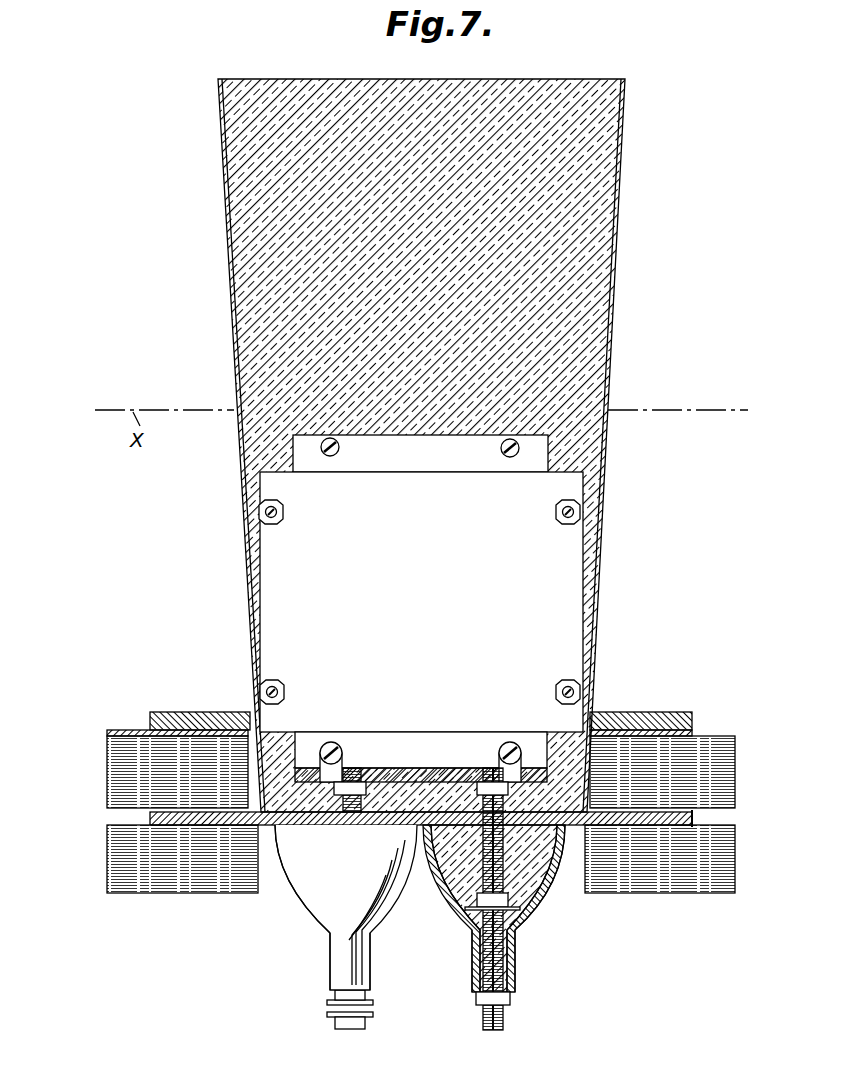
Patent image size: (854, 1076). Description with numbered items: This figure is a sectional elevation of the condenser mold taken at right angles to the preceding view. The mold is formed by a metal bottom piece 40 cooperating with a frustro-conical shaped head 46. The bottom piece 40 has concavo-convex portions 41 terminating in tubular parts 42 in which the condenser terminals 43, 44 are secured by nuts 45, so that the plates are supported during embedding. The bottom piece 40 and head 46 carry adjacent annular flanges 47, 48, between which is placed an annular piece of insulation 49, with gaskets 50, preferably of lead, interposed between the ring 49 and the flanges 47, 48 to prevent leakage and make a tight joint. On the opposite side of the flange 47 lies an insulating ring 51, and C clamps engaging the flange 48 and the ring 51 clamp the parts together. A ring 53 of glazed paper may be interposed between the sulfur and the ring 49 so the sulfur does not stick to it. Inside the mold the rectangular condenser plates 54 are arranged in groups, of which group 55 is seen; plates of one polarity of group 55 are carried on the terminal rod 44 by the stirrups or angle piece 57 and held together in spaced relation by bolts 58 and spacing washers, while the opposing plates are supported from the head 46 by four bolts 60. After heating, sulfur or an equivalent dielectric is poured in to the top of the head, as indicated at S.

The frustro-conical shaped head 46 is at (623, 148).
The sulfur fill level S is at (245, 168).
The condenser plates 54 is at (420, 583).
The group of plates 55 is at (575, 590).
The stirrups or angle piece 57 is at (400, 778).
The bolts 58 is at (515, 452).
The bolts 60 is at (580, 512).
The annular flange 48 is at (672, 712).
The gaskets 50 is at (692, 733).
The annular piece of insulation 49 is at (735, 776).
The annular flange 47 is at (700, 818).
The insulating ring or annular piece 51 is at (728, 846).
The ring of glazed paper 53 is at (257, 783).
The metal bottom piece 40 is at (300, 826).
The concavo-convex portions 41 is at (316, 904).
The tubular parts 42 is at (371, 966).
The terminal 43 is at (352, 814).
The terminal rod 44 is at (472, 940).
The nuts 45 is at (373, 1002).